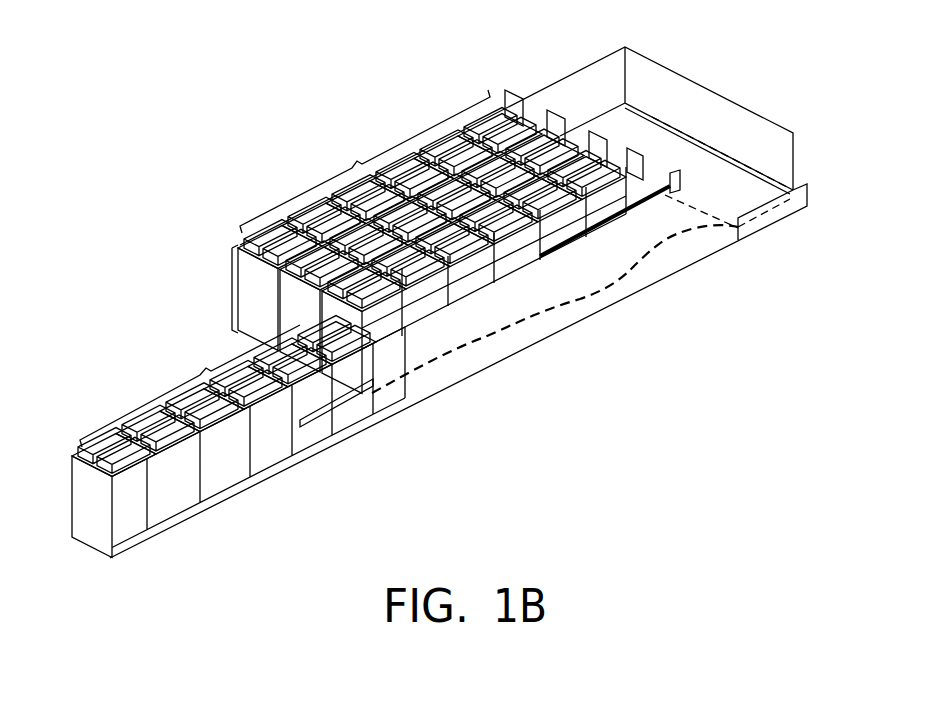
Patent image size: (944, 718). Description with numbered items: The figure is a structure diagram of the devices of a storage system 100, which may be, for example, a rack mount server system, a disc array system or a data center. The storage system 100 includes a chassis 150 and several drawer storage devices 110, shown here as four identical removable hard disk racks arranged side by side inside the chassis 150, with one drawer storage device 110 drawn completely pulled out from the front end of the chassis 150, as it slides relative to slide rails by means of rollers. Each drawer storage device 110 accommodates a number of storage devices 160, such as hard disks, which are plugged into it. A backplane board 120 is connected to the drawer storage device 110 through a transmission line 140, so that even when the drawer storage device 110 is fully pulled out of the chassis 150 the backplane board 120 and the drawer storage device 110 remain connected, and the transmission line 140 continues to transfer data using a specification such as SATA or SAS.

The storage system 100 is at (838, 490).
The drawer storage device 110 is at (253, 263).
The backplane board 120 is at (782, 226).
The transmission line 140 is at (666, 256).
The chassis 150 is at (577, 87).
The storage device 160 is at (380, 268).